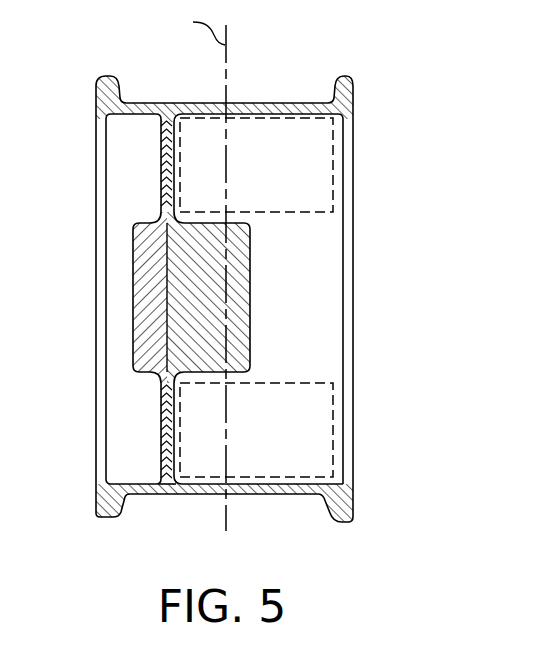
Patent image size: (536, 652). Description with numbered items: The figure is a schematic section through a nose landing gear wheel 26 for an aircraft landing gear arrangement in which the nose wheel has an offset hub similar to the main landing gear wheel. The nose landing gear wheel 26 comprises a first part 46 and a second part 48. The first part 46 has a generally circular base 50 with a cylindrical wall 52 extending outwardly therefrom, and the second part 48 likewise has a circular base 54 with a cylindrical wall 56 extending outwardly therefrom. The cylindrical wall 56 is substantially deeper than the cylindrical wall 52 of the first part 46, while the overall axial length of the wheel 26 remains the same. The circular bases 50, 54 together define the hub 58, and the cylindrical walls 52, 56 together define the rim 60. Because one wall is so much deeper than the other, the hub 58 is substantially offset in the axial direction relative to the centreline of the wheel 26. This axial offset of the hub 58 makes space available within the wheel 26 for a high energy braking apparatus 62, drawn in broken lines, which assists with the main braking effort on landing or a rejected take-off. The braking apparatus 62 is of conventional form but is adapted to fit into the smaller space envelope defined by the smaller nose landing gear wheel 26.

The nose landing gear wheel 26 is at (234, 278).
The first part 46 is at (127, 498).
The second part 48 is at (197, 494).
The circular base 50 is at (161, 420).
The cylindrical wall 52 is at (144, 103).
The circular base 54 is at (170, 494).
The cylindrical wall 56 is at (289, 495).
The hub 58 is at (166, 308).
The rim 60 is at (279, 103).
The high energy braking apparatus 62 is at (338, 163).